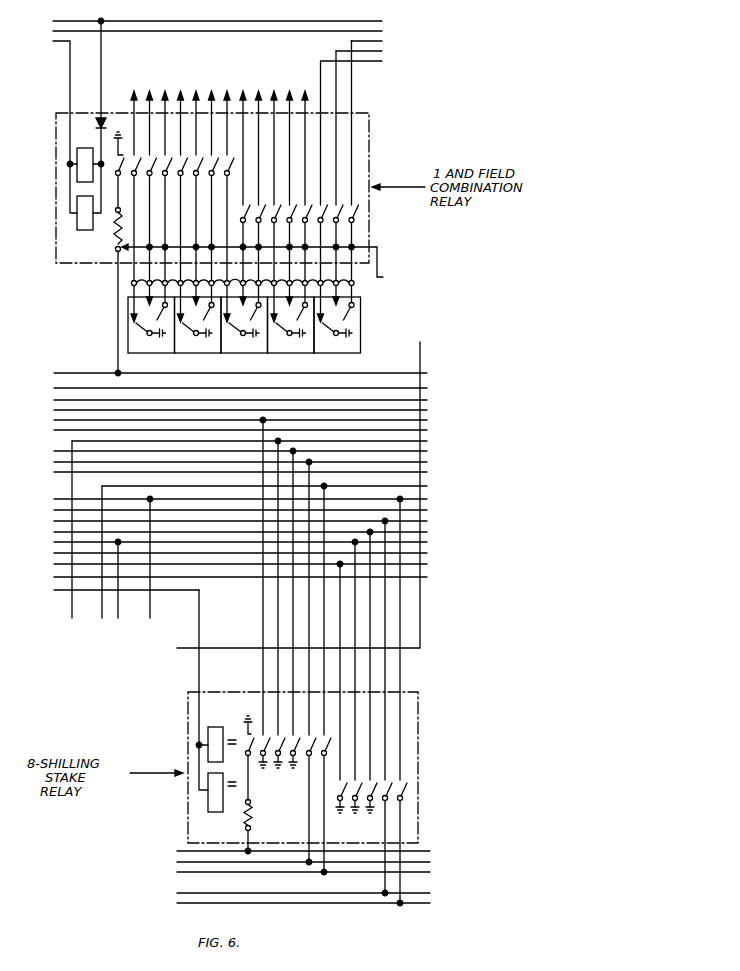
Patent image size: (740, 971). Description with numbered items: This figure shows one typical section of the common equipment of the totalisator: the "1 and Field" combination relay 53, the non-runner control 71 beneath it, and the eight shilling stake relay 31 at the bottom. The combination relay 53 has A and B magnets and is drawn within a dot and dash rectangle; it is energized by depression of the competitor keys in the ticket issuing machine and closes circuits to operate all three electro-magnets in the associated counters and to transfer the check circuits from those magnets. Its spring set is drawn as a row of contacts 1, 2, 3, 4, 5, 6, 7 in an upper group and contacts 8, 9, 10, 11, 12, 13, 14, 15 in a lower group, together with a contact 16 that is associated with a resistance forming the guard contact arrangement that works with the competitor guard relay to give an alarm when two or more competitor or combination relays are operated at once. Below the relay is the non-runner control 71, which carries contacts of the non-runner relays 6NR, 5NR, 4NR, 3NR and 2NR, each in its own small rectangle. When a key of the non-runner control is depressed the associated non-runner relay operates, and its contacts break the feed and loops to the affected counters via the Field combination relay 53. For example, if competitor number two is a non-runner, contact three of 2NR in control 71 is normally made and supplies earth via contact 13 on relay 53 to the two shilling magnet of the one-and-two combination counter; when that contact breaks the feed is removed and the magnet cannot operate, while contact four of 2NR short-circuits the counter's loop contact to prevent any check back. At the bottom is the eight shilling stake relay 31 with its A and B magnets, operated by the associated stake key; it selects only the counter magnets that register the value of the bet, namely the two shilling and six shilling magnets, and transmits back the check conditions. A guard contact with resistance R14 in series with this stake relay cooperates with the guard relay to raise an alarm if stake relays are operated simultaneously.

The combination relay 53 is at (79, 124).
The contact of relay 53 16 is at (113, 254).
The contact 1 is at (196, 437).
The contact 2 is at (211, 437).
The contact 3 is at (226, 437).
The contact 4 is at (242, 478).
The contact 5 is at (257, 483).
The contact 6 is at (273, 460).
The contact 7 is at (288, 460).
The contact 8 is at (304, 460).
The contact 9 is at (320, 493).
The contact 10 is at (334, 498).
The contact 11 is at (264, 445).
The contact 12 is at (302, 197).
The contact 13 is at (318, 187).
The contact 14 is at (333, 174).
The contact 15 is at (349, 172).
The non-runner control 71 is at (246, 326).
The non-runner relay 6NR is at (149, 326).
The non-runner relay 5NR is at (196, 326).
The non-runner relay 4NR is at (242, 326).
The non-runner relay 3NR is at (289, 326).
The non-runner relay 2NR is at (336, 326).
The stake relay 31 is at (216, 701).
The guard contact resistance R14 is at (262, 827).